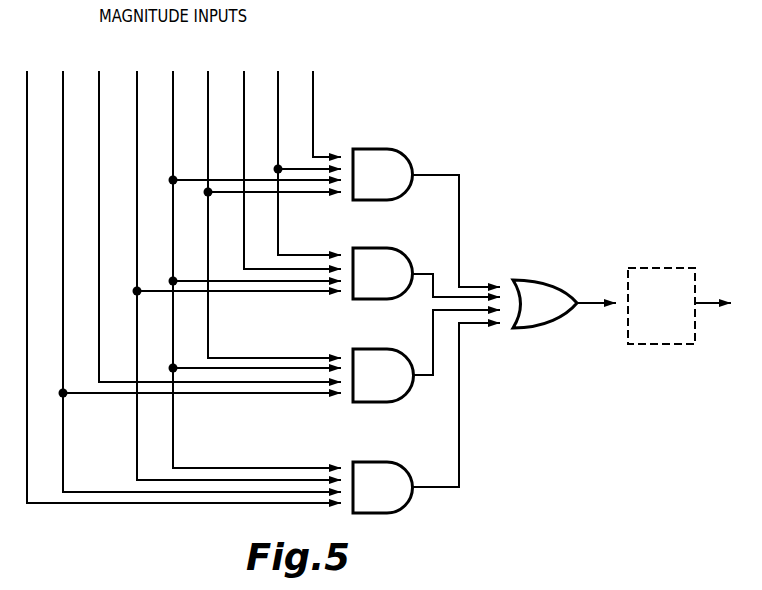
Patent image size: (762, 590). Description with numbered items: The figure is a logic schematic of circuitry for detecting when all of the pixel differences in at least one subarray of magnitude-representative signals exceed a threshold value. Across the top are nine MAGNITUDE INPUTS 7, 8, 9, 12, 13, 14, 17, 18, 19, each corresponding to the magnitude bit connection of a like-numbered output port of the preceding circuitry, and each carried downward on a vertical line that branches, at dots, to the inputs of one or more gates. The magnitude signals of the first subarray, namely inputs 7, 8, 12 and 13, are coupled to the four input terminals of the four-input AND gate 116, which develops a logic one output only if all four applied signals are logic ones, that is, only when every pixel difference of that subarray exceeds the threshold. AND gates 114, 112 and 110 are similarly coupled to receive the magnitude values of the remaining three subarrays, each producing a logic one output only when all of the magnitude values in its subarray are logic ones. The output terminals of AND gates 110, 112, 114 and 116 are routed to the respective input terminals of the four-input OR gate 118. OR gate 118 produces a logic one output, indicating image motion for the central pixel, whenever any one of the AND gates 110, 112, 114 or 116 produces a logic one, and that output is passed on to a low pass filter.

The magnitude input 7 is at (177, 273).
The magnitude input 8 is at (195, 267).
The magnitude input 9 is at (213, 212).
The magnitude input 12 is at (232, 261).
The magnitude input 13 is at (250, 255).
The magnitude input 14 is at (267, 200).
The magnitude input 17 is at (285, 156).
The magnitude input 18 is at (302, 149).
The magnitude input 19 is at (320, 100).
The AND gate 110 is at (383, 149).
The AND gate 112 is at (393, 248).
The AND gate 114 is at (370, 349).
The AND gate 116 is at (386, 462).
The OR gate 118 is at (527, 282).